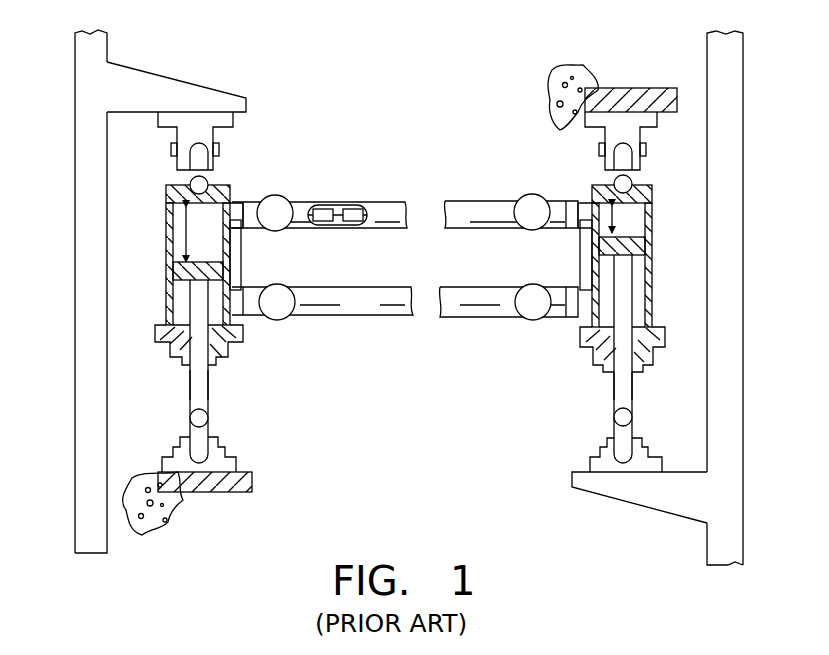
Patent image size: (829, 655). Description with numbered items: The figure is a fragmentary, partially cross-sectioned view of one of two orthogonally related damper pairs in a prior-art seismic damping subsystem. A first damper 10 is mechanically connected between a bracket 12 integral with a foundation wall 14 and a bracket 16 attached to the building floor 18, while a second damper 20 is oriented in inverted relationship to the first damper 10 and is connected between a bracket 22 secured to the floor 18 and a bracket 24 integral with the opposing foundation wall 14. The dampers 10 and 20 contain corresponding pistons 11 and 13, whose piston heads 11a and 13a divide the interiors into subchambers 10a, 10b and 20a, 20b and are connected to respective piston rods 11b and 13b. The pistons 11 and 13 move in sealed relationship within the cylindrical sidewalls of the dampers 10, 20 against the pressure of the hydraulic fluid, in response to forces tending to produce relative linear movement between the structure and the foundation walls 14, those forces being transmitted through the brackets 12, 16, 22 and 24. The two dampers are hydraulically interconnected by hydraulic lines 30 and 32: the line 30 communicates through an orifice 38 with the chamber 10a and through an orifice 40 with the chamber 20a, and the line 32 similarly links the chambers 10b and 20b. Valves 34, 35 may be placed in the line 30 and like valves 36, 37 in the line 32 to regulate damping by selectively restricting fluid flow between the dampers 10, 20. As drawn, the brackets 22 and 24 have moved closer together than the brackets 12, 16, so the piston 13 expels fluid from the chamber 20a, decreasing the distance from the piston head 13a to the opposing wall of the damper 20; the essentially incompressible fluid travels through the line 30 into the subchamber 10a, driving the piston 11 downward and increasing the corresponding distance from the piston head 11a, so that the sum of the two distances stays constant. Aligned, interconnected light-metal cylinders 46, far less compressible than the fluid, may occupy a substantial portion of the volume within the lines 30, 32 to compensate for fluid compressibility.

The first damper 10 is at (177, 258).
The subchamber 10a is at (166, 243).
The subchamber 10b is at (170, 300).
The piston 11 is at (196, 371).
The piston head 11a is at (173, 271).
The piston rod 11b is at (188, 385).
The bracket 12 is at (164, 76).
The piston 13 is at (617, 359).
The piston head 13a is at (645, 247).
The piston rod 13b is at (620, 373).
The foundation wall 14 is at (75, 142).
The bracket 16 is at (233, 485).
The building floor 18 is at (166, 536).
The second damper 20 is at (641, 265).
The subchamber 20a is at (650, 233).
The subchamber 20b is at (650, 300).
The bracket 22 is at (617, 88).
The bracket 24 is at (617, 490).
The hydraulic line 30 is at (372, 203).
The hydraulic line 32 is at (358, 316).
The valve 34 is at (283, 196).
The valve 35 is at (528, 196).
The valve 36 is at (280, 320).
The valve 37 is at (527, 320).
The orifice 38 is at (231, 200).
The orifice 40 is at (587, 202).
The cylinder 46 is at (330, 208).